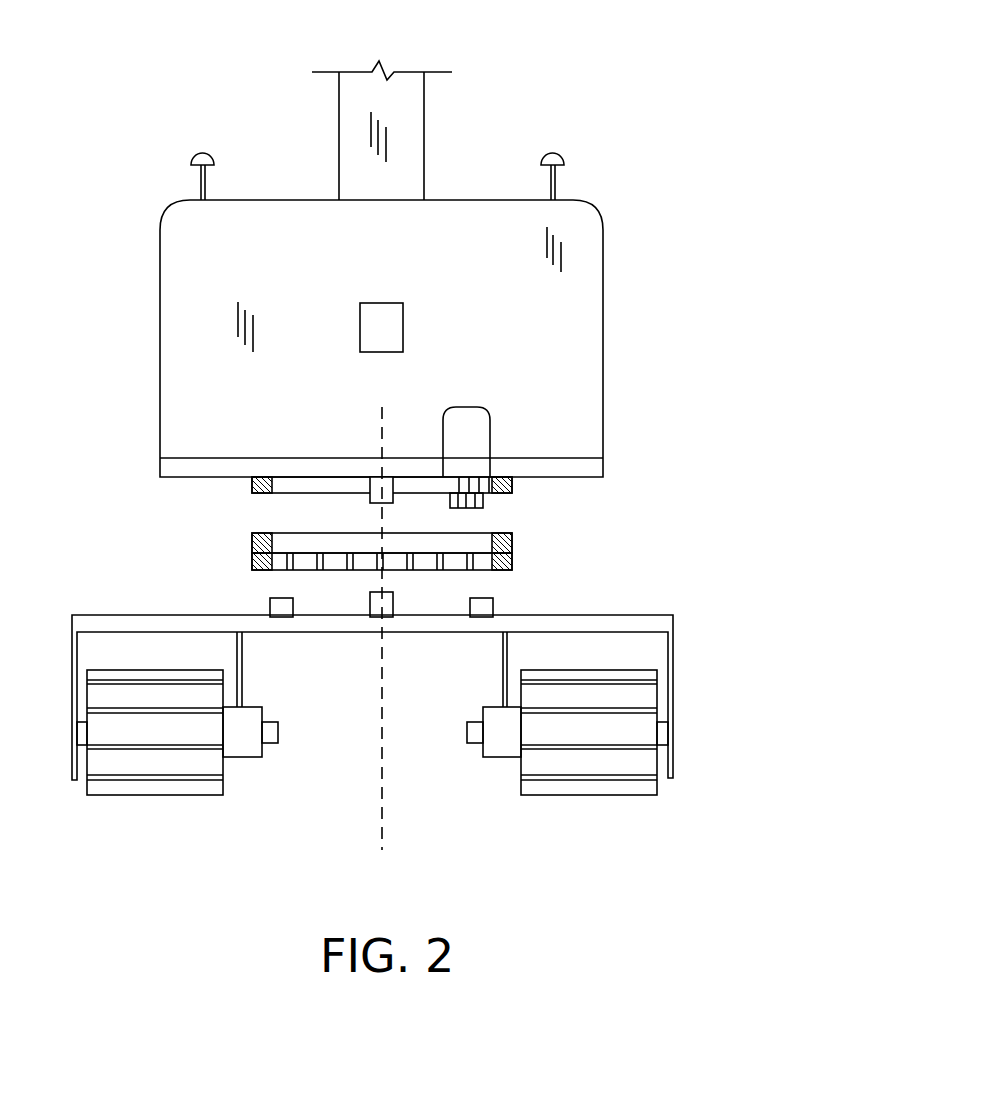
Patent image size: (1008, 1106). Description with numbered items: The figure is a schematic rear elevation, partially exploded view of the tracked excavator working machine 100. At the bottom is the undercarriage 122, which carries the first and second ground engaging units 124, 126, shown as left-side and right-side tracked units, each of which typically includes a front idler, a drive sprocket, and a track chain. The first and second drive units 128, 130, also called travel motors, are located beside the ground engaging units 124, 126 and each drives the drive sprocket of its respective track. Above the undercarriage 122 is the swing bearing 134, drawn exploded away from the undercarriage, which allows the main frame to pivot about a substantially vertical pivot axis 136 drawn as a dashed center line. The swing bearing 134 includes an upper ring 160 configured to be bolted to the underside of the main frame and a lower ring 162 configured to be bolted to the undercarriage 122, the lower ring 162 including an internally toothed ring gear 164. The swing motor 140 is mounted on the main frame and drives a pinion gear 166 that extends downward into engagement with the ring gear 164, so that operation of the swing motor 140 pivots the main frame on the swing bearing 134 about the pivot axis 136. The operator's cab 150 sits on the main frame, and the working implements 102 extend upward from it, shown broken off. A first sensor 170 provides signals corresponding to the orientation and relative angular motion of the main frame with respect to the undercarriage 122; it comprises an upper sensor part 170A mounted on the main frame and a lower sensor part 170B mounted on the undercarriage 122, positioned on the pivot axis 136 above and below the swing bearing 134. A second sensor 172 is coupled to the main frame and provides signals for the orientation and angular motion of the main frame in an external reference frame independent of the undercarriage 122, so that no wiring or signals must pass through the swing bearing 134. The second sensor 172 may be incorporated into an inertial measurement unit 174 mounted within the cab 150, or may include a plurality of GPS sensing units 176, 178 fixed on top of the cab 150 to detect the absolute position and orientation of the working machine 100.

The working machine 100 is at (686, 56).
The working implements 102 is at (412, 147).
The undercarriage 122 is at (692, 626).
The first ground engaging unit 124 is at (125, 788).
The second ground engaging unit 126 is at (648, 787).
The first drive unit 128 is at (240, 748).
The second drive unit 130 is at (502, 743).
The swing bearing 134 is at (393, 567).
The pivot axis 136 is at (383, 840).
The swing motor 140 is at (475, 437).
The operator's cab 150 is at (592, 262).
The upper ring 160 is at (260, 545).
The lower ring 162 is at (258, 566).
The internally toothed ring gear 164 is at (338, 562).
The pinion gear 166 is at (483, 498).
The first sensor 170 is at (562, 484).
The upper sensor part 170A is at (385, 480).
The lower sensor part 170B is at (388, 593).
The second sensor 172 is at (403, 231).
The inertial measurement unit 174 is at (387, 323).
The GPS sensing unit 176 is at (203, 150).
The GPS sensing unit 178 is at (553, 150).